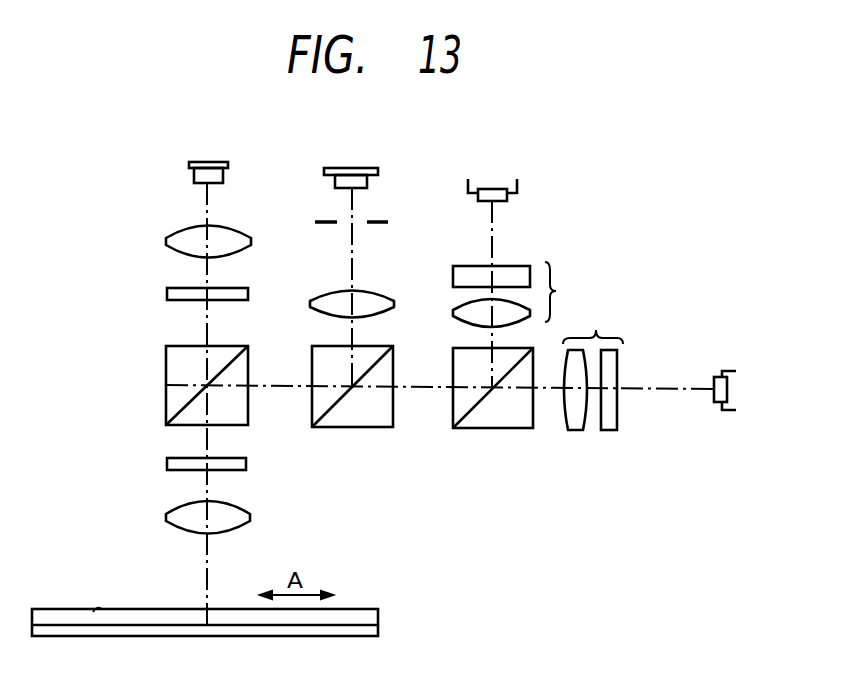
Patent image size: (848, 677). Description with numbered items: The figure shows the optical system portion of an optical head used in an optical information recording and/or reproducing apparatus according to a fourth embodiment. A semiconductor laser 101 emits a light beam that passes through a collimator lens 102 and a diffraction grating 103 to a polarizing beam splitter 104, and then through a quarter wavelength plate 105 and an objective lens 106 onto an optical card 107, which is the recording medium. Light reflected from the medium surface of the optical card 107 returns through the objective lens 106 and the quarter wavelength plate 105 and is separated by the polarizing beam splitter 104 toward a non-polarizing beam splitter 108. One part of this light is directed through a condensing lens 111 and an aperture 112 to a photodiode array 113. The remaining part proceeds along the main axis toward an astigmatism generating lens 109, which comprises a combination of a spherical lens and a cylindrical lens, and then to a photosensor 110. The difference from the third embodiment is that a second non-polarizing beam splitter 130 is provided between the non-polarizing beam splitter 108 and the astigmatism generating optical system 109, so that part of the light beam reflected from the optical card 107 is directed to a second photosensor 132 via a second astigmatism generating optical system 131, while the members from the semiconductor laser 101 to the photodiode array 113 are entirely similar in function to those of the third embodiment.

The semiconductor laser 101 is at (189, 167).
The collimator lens 102 is at (168, 241).
The diffraction grating 103 is at (167, 294).
The polarizing beam splitter 104 is at (166, 370).
The quarter wavelength plate 105 is at (167, 463).
The objective lens 106 is at (167, 517).
The optical card 107 is at (68, 612).
The non-polarizing beam splitter 108 is at (367, 428).
The astigmatism generating lens 109 is at (596, 329).
The photosensor 110 is at (731, 371).
The condensing lens 111 is at (385, 296).
The aperture 112 is at (380, 222).
The photodiode array 113 is at (378, 172).
The second non-polarizing beam splitter 130 is at (512, 430).
The second astigmatism generating optical system 131 is at (556, 291).
The second photosensor 132 is at (520, 190).